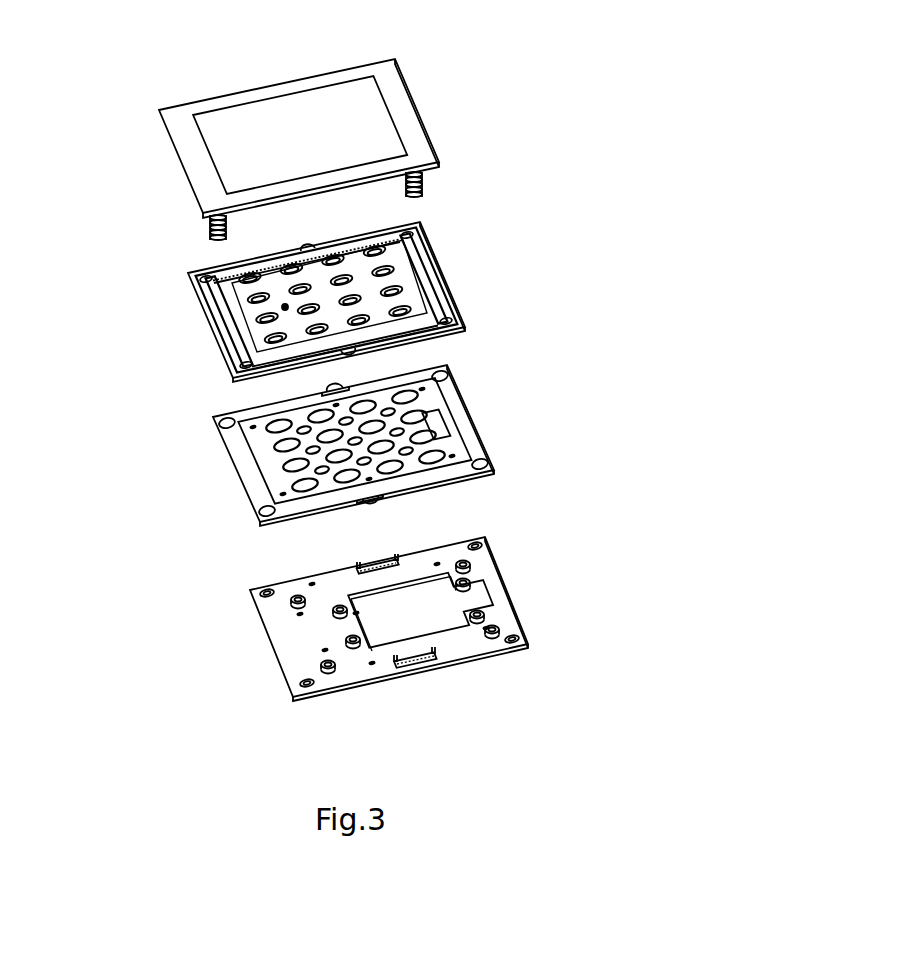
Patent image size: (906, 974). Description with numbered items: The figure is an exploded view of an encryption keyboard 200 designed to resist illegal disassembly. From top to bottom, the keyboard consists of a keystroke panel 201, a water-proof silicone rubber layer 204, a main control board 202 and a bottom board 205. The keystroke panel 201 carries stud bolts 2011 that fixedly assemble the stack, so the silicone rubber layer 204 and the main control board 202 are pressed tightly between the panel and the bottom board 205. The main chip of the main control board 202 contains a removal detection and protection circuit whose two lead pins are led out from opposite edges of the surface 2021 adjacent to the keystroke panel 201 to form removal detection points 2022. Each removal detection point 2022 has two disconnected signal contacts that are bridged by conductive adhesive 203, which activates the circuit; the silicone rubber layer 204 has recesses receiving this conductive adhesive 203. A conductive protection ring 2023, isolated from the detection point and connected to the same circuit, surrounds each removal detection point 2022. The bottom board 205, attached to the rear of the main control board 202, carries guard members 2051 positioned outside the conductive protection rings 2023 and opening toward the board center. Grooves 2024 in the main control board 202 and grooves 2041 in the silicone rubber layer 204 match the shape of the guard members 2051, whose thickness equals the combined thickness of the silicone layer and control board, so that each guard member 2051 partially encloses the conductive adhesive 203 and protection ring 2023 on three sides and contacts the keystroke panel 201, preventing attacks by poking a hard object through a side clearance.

The encryption keyboard 200 is at (178, 51).
The keystroke panel 201 is at (407, 117).
The stud bolts 2011 is at (423, 183).
The main control board 202 is at (467, 408).
The surface 2021 is at (267, 467).
The removal detection points 2022 is at (383, 493).
The conductive protection ring 2023 is at (465, 452).
The grooves 2024 is at (342, 390).
The conductive adhesive 203 is at (307, 250).
The water-proof silicone rubber layer 204 is at (398, 297).
The grooves 2041 is at (253, 352).
The bottom board 205 is at (262, 623).
The guard members 2051 is at (353, 563).